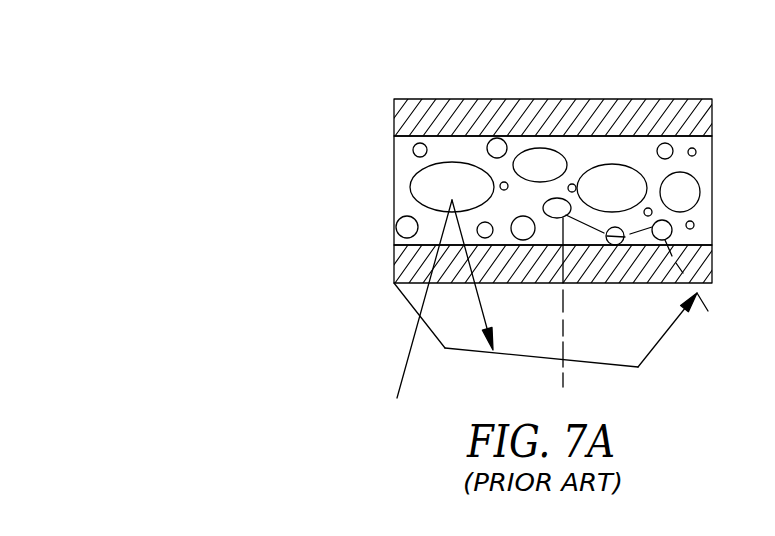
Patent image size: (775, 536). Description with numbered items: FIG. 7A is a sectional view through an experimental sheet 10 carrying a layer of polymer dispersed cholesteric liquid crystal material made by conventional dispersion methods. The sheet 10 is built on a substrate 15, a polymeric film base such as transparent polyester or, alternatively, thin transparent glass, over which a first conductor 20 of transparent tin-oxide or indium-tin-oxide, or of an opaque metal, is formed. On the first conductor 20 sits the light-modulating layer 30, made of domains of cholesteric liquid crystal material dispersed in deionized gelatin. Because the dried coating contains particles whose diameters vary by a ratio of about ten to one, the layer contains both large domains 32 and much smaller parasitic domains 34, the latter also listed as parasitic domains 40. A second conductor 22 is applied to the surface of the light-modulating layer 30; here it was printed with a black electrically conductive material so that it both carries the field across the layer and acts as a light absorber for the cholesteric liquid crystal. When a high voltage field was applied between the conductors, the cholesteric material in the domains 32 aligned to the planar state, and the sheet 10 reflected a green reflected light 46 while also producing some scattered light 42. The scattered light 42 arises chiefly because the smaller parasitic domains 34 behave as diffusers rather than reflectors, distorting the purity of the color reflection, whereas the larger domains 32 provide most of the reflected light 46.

The sheet 10 is at (240, 132).
The second conductor 22 is at (394, 124).
The first conductor 20 is at (394, 270).
The light-modulating layer 30 is at (393, 137).
The domains 32 is at (470, 188).
The parasitic domains 34 is at (694, 225).
The substrate 15 is at (408, 301).
The parasitic domains 40 is at (410, 352).
The reflected light 46 is at (480, 293).
The scattered light 42 is at (563, 330).